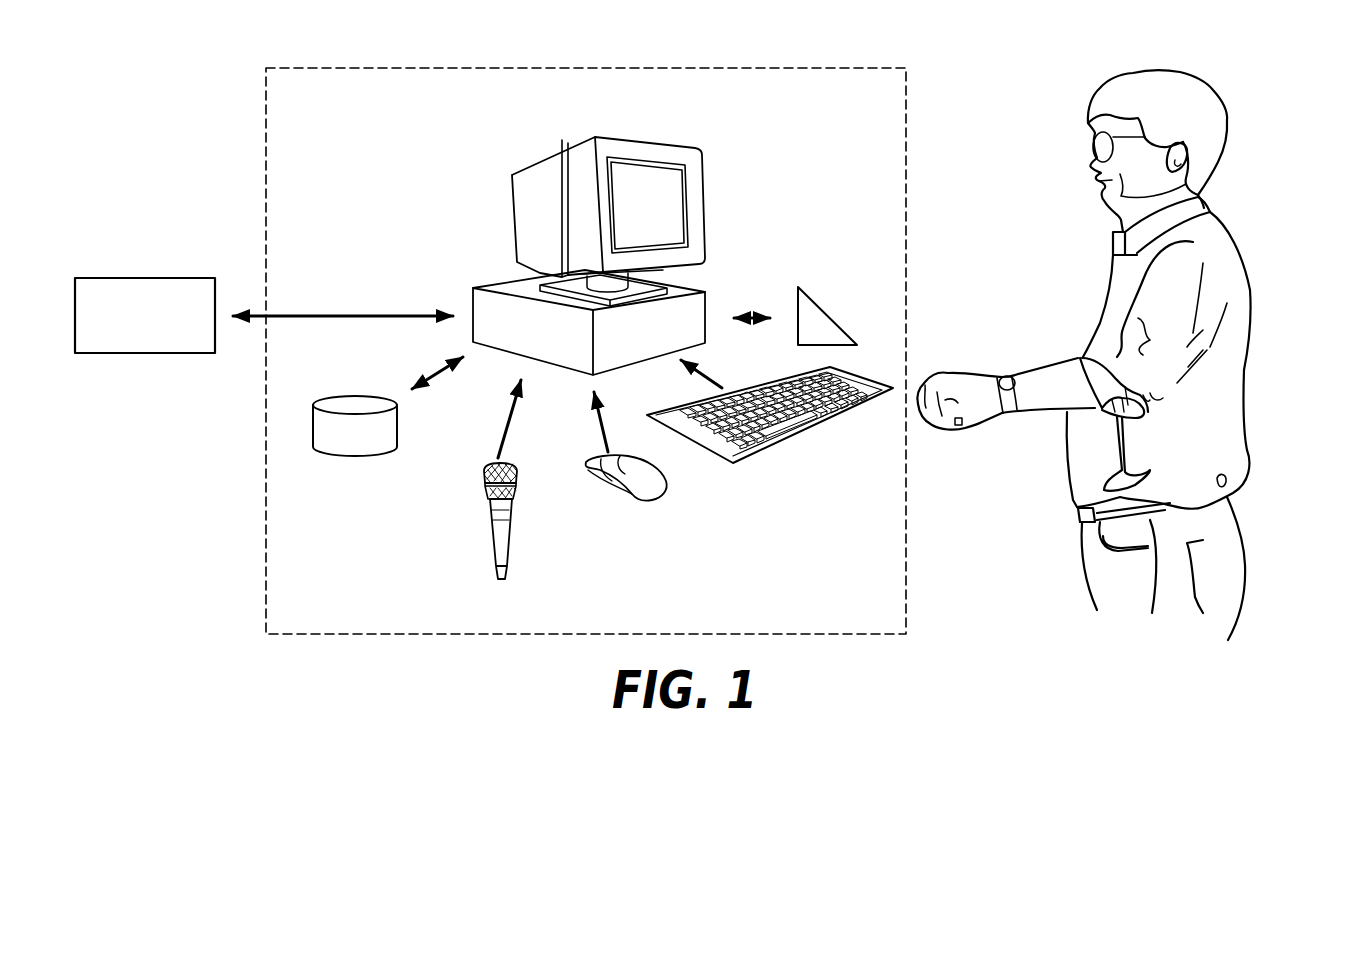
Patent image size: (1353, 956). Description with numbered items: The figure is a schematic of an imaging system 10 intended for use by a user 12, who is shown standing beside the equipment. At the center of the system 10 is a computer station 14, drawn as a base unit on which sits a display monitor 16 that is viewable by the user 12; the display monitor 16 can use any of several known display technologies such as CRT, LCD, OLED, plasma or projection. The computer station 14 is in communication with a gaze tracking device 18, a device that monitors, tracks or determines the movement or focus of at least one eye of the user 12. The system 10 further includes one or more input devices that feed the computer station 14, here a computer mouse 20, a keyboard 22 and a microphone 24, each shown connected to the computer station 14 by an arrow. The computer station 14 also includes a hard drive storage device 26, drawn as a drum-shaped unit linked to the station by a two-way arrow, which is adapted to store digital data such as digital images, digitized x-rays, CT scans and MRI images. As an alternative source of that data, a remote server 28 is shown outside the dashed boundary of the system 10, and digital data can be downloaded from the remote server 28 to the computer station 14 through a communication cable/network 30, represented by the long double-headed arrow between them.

The imaging system 10 is at (711, 68).
The user 12 is at (1237, 247).
The computer station 14 is at (502, 284).
The display monitor 16 is at (655, 150).
The gaze tracking device 18 is at (834, 310).
The computer mouse 20 is at (645, 500).
The keyboard 22 is at (777, 438).
The microphone 24 is at (502, 581).
The hard drive storage device 26 is at (350, 449).
The remote server 28 is at (127, 278).
The communication cable/network 30 is at (357, 316).